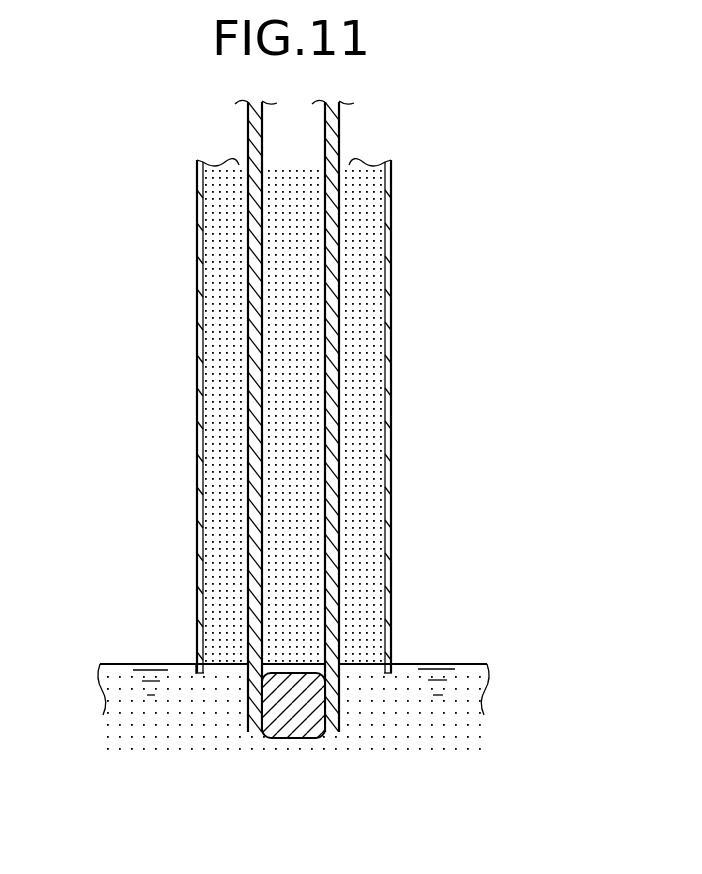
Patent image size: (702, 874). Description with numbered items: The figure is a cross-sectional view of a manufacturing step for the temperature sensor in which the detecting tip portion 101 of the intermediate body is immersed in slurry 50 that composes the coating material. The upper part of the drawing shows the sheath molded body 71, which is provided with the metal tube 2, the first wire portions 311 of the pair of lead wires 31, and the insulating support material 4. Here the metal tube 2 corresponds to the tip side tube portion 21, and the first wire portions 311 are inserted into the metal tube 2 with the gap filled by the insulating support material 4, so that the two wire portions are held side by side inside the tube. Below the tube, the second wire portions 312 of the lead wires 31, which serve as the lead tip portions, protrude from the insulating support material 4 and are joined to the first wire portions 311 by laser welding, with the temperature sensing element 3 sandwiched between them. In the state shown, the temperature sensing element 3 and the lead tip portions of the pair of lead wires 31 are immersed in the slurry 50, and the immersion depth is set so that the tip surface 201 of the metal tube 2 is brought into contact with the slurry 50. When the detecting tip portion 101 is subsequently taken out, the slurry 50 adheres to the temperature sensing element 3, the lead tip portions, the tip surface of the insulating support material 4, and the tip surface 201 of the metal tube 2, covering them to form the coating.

The sheath molded body 71 is at (423, 195).
The metal tube 2 is at (228, 416).
The tip side tube portion 21 is at (197, 340).
The insulating support material 4 is at (367, 465).
The lead wires 31 is at (251, 482).
The first wire portions 311 is at (248, 548).
The second wire portions 312 is at (340, 703).
The temperature sensing element 3 is at (292, 717).
The tip surface of the metal tube 201 is at (198, 673).
The detecting tip portion 101 is at (240, 742).
The slurry 50 is at (428, 728).